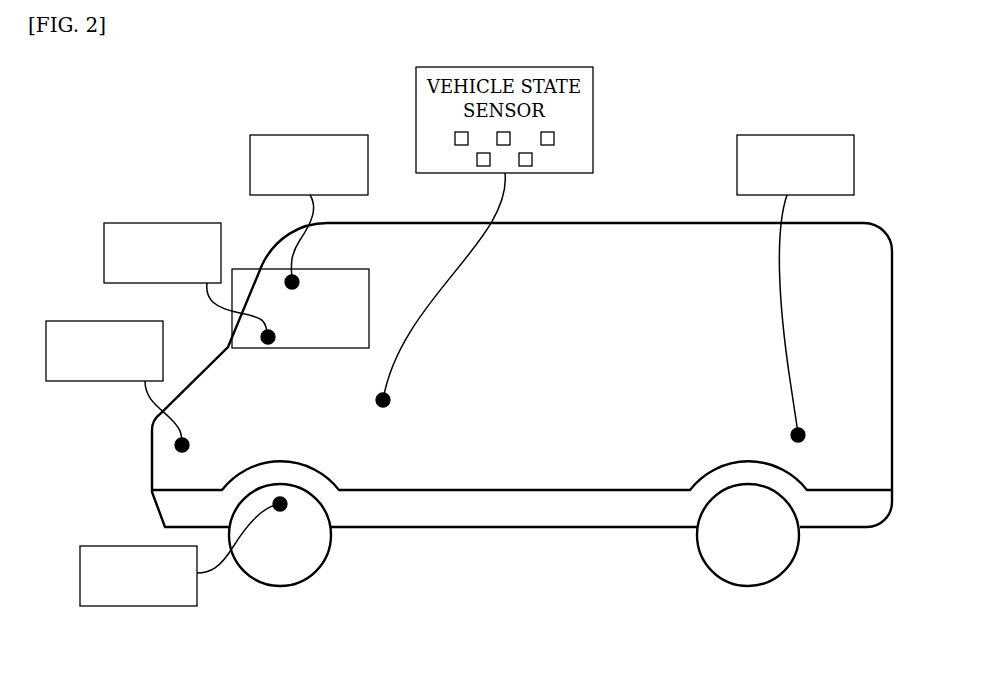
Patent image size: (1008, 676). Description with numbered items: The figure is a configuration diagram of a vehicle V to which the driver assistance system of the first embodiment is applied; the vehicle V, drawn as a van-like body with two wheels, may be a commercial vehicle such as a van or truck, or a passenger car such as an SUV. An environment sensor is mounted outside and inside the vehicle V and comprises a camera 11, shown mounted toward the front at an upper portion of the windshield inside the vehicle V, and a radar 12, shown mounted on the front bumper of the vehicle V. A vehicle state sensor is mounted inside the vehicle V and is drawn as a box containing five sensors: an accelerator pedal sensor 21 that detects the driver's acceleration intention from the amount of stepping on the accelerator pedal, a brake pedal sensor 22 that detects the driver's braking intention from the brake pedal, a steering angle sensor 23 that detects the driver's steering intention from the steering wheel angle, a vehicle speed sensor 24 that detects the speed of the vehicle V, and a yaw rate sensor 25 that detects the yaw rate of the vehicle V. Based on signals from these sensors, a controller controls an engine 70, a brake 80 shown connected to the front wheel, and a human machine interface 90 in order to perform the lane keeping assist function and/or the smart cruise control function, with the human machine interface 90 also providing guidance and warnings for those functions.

The camera 11 is at (350, 135).
The radar 12 is at (58, 321).
The accelerator pedal sensor 21 is at (455, 138).
The brake pedal sensor 22 is at (497, 141).
The steering angle sensor 23 is at (554, 138).
The vehicle speed sensor 24 is at (483, 166).
The yaw rate sensor 25 is at (525, 166).
The engine 70 is at (92, 546).
The brake 80 is at (834, 135).
The human machine interface (HMI) 90 is at (201, 223).
The vehicle V is at (694, 222).